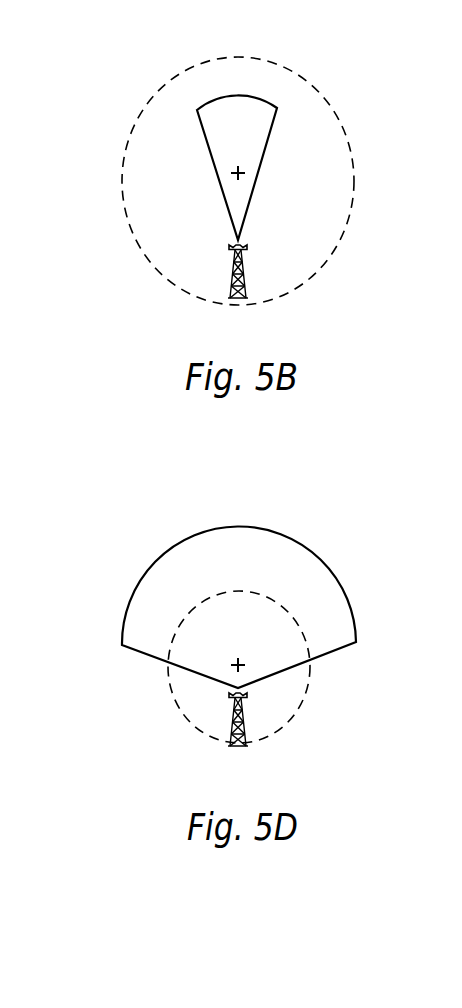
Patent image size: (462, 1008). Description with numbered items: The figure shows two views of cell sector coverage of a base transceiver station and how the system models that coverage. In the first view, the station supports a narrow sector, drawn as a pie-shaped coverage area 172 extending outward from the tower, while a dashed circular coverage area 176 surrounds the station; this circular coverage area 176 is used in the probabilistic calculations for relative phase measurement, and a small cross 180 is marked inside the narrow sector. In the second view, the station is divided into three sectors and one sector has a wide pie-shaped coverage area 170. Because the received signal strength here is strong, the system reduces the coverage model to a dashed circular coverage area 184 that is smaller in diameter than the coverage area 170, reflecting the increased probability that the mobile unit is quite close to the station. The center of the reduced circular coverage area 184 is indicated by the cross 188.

In FIG. 5D, the wide coverage area 170 is at (353, 608).
In FIG. 5B, the narrow coverage area 172 is at (275, 130).
In FIG. 5B, the coverage area 176 is at (333, 253).
In FIG. 5B, the beam center point 180 is at (242, 171).
In FIG. 5D, the reduced circular coverage area 184 is at (258, 594).
In FIG. 5D, the center of the reduced circular coverage area 188 is at (241, 663).